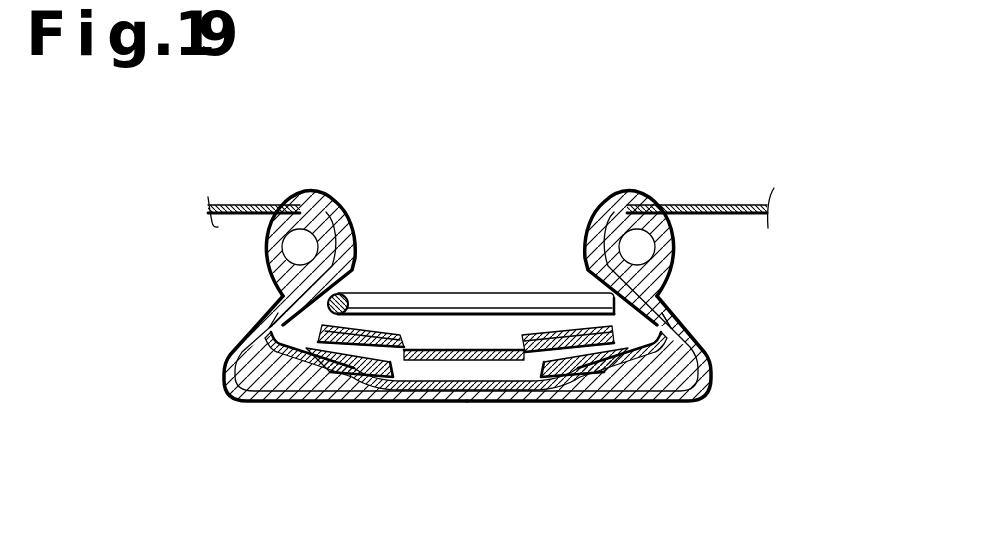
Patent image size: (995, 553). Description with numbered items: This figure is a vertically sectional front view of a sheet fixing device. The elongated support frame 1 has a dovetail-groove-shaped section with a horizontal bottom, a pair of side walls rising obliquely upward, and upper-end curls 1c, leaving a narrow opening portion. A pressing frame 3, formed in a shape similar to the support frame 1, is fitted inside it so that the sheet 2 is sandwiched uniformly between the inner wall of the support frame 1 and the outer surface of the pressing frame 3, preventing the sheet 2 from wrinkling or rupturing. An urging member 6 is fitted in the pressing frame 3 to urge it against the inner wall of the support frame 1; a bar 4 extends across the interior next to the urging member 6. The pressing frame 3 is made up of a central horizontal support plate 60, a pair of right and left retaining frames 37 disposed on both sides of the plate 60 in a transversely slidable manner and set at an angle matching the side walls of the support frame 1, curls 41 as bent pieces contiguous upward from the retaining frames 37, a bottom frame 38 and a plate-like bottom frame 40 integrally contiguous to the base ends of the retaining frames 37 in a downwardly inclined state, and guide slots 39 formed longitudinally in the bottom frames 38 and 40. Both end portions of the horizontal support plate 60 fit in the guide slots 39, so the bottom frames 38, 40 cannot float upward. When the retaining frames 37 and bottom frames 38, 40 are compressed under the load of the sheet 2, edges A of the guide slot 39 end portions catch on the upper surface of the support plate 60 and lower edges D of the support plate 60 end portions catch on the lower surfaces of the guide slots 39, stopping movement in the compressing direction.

The elongated support frame 1 is at (522, 412).
The upper-end curls 1c is at (672, 246).
The sheet 2 is at (725, 203).
The pressing frame 3 is at (597, 190).
The locking bar 4 is at (451, 292).
The urging member 6 is at (406, 290).
The retaining frames 37 is at (273, 263).
The bottom frame 38 is at (342, 403).
The guide slots 39 is at (297, 403).
The plate-like bottom frame 40 is at (640, 396).
The curls 41 is at (313, 193).
The horizontal support plate 60 is at (478, 380).
The edges of end portions of the guide slots A is at (432, 378).
The lower edges of end portions of the horizontal support plate D is at (385, 380).